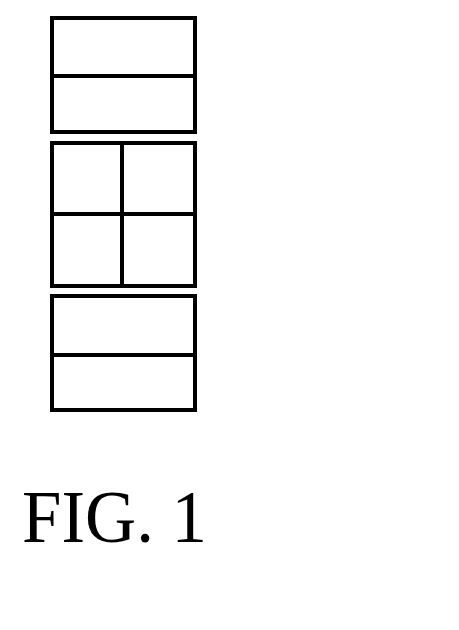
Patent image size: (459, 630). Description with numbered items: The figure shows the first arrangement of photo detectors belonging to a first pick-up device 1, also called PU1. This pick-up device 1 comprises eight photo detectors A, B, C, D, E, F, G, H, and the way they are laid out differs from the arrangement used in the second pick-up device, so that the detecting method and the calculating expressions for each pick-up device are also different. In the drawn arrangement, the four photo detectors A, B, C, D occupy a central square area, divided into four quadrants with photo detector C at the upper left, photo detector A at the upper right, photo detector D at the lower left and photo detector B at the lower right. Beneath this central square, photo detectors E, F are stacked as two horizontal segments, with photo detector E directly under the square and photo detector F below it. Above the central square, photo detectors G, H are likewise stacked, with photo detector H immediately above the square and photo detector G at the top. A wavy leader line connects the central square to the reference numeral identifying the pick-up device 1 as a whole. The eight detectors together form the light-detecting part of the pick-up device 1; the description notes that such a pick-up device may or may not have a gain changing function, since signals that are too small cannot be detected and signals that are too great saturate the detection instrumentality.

The first pick-up device 1 is at (172, 214).
The photo detector A is at (158, 178).
The photo detector B is at (158, 250).
The photo detector C is at (87, 178).
The photo detector D is at (87, 250).
The photo detector E is at (123, 325).
The photo detector F is at (123, 382).
The photo detector G is at (123, 47).
The photo detector H is at (123, 104).